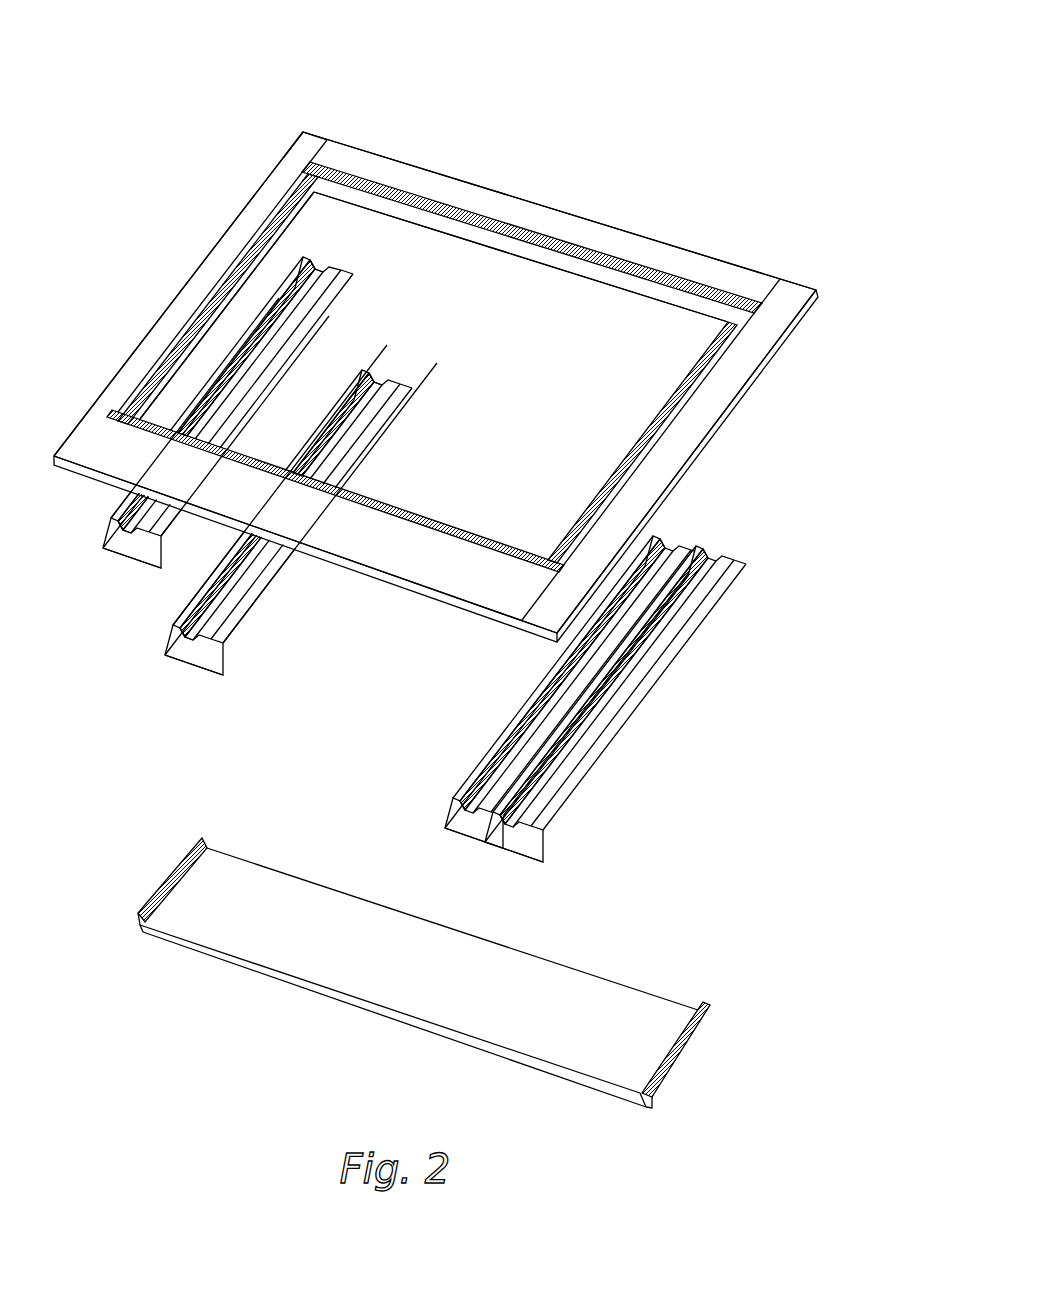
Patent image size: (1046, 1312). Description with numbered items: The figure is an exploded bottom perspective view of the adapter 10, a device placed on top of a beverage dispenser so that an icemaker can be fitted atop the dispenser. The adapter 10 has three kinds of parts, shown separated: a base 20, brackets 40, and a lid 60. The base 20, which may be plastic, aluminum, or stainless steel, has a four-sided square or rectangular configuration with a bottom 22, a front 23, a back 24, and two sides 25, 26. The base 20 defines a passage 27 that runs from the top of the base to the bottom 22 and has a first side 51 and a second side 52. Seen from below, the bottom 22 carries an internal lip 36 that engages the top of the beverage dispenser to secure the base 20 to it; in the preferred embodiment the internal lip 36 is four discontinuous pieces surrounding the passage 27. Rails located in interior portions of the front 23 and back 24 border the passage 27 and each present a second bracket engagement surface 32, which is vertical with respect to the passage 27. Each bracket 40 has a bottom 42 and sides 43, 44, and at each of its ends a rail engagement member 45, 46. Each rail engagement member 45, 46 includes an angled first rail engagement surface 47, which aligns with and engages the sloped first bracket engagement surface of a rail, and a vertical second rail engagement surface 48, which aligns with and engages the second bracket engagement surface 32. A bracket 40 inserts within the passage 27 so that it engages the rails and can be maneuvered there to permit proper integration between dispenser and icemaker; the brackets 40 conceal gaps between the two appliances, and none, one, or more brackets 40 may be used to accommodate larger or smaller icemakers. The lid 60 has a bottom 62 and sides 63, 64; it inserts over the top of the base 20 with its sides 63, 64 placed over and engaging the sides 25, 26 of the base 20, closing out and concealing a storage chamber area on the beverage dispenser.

The adapter 10 is at (664, 126).
The base 20 is at (436, 430).
The bottom 22 is at (298, 157).
The front 23 is at (386, 584).
The back 24 is at (632, 230).
The side 25 is at (690, 452).
The side 26 is at (196, 267).
The passage 27 is at (508, 386).
The second bracket engagement surface 32 is at (463, 232).
The internal lip 36 is at (434, 367).
The bracket 40 is at (133, 558).
The bottom 42 is at (298, 305).
The side 43 is at (296, 352).
The side 44 is at (222, 378).
The rail engagement member 45 is at (110, 552).
The rail engagement member 46 is at (320, 268).
The first rail engagement surface 47 is at (312, 260).
The second rail engagement surface 48 is at (303, 258).
The first side 51 is at (692, 364).
The second side 52 is at (250, 247).
The lid 60 is at (419, 983).
The bottom 62 is at (490, 980).
The side 63 is at (673, 1053).
The side 64 is at (152, 893).